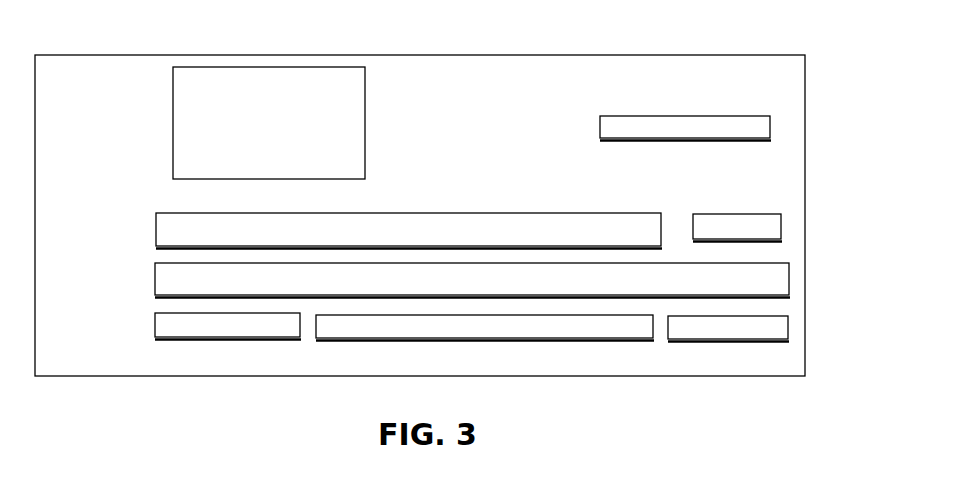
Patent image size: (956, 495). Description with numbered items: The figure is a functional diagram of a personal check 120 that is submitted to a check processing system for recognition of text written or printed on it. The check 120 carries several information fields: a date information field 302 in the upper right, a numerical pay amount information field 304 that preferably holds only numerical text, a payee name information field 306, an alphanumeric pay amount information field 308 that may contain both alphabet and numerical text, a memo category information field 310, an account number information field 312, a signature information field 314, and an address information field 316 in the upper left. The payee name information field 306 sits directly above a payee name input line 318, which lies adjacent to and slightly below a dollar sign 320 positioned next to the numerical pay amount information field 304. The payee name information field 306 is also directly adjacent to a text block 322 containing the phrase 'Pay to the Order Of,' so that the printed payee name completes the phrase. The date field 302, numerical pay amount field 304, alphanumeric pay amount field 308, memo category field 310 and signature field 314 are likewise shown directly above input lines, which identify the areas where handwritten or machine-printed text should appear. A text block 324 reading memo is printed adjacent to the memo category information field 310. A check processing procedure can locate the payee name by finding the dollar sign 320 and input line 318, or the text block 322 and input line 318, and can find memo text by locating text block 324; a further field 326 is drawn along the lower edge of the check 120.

The check 120 is at (533, 55).
The date information field 302 is at (637, 116).
The numerical pay amount information field 304 is at (781, 228).
The payee name information field 306 is at (206, 213).
The alphanumeric pay amount information field 308 is at (789, 280).
The memo category information field 310 is at (155, 313).
The account number information field 312 is at (316, 328).
The signature information field 314 is at (788, 328).
The address information field 316 is at (365, 107).
The payee name input line 318 is at (155, 263).
The dollar sign 320 is at (686, 210).
The text block 322 is at (79, 204).
The text block 324 is at (127, 337).
The routing number field 326 is at (443, 341).